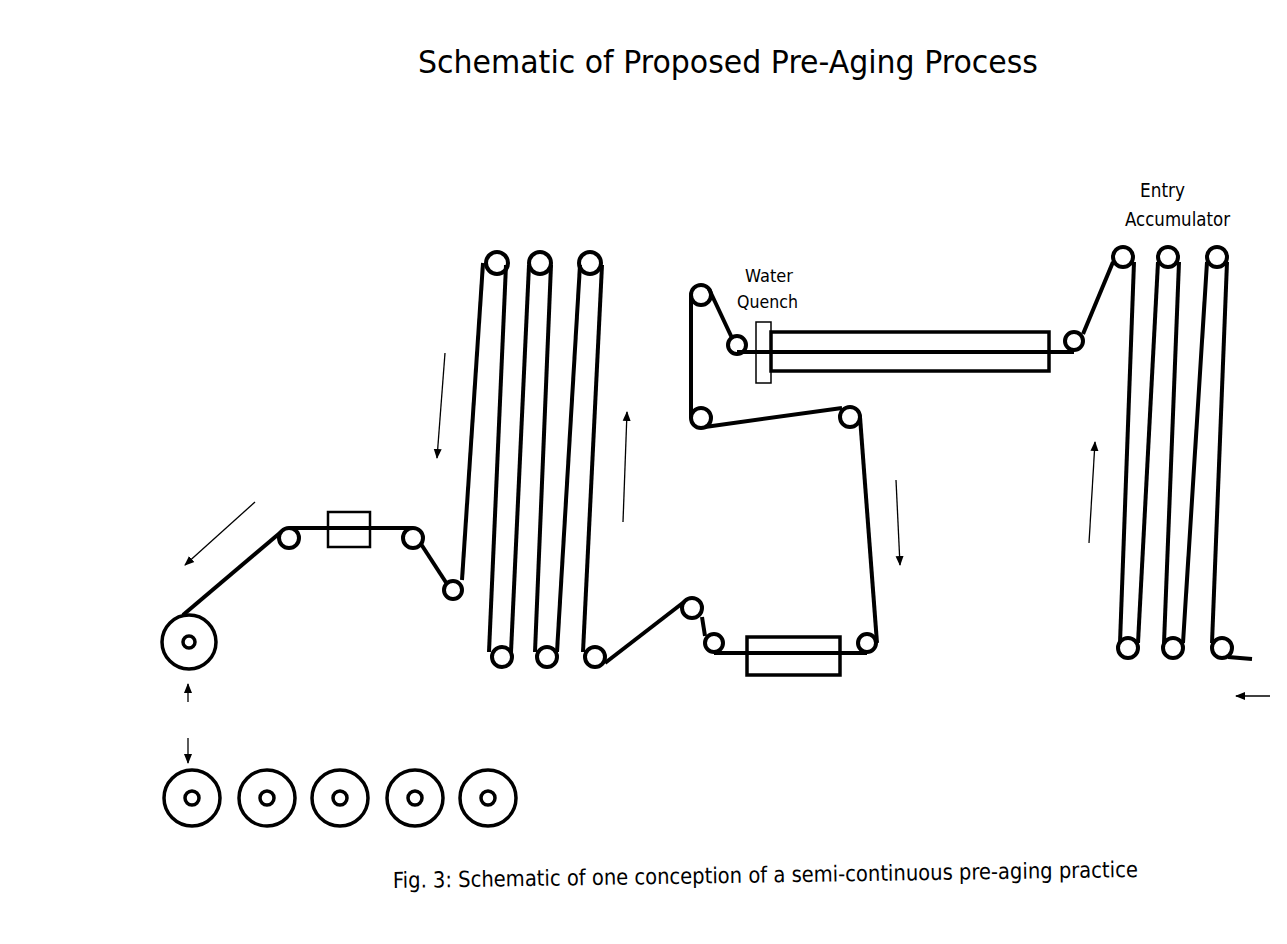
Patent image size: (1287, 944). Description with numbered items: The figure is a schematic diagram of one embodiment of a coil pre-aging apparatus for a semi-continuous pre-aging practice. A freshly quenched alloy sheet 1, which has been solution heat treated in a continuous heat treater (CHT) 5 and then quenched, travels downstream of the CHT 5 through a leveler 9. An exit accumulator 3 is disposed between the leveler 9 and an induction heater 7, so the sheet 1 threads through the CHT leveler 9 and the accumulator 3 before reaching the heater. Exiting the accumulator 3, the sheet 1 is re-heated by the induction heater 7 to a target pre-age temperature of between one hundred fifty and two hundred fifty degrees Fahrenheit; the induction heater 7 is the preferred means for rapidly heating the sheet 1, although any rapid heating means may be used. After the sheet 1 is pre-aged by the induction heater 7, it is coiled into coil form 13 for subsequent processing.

The sheet 1 is at (784, 464).
The exit accumulator 3 is at (560, 405).
The continuous heat treater (CHT) 5 is at (925, 316).
The induction heater 7 is at (322, 572).
The leveler 9 is at (779, 654).
The coil form 13 is at (315, 761).